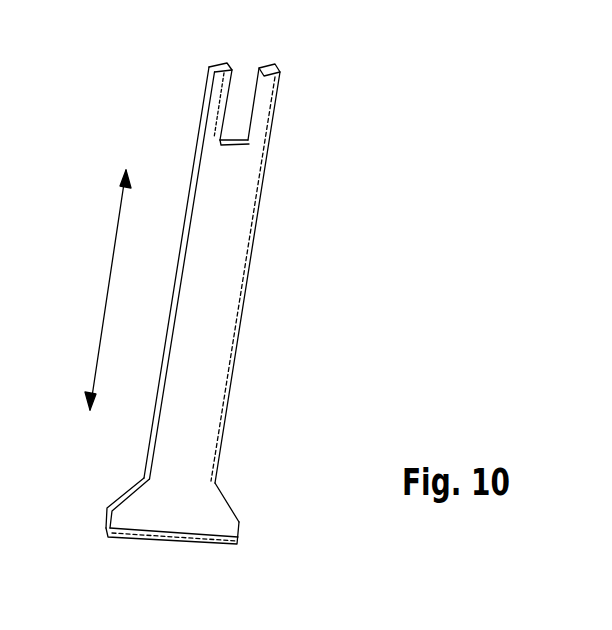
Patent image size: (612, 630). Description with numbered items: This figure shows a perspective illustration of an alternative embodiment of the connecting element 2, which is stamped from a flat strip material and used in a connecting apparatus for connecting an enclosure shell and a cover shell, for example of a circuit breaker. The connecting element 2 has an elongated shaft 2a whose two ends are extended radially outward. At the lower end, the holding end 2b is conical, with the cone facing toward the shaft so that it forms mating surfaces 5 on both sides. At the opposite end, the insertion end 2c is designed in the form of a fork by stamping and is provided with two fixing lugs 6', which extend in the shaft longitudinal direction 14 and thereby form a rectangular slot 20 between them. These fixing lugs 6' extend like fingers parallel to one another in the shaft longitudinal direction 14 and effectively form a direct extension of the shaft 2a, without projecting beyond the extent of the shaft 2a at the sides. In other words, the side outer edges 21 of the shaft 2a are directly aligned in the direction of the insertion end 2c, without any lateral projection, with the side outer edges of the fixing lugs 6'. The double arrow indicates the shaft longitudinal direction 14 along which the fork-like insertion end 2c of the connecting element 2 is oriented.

The connecting element 2 is at (215, 300).
The shaft 2a is at (213, 272).
The holding end 2b is at (173, 515).
The insertion end 2c is at (243, 77).
The mating surfaces 5 is at (125, 493).
The fixing lugs 6' is at (248, 100).
The shaft longitudinal direction 14 is at (108, 285).
The rectangular slot 20 is at (238, 113).
The side outer edges 21 is at (197, 141).